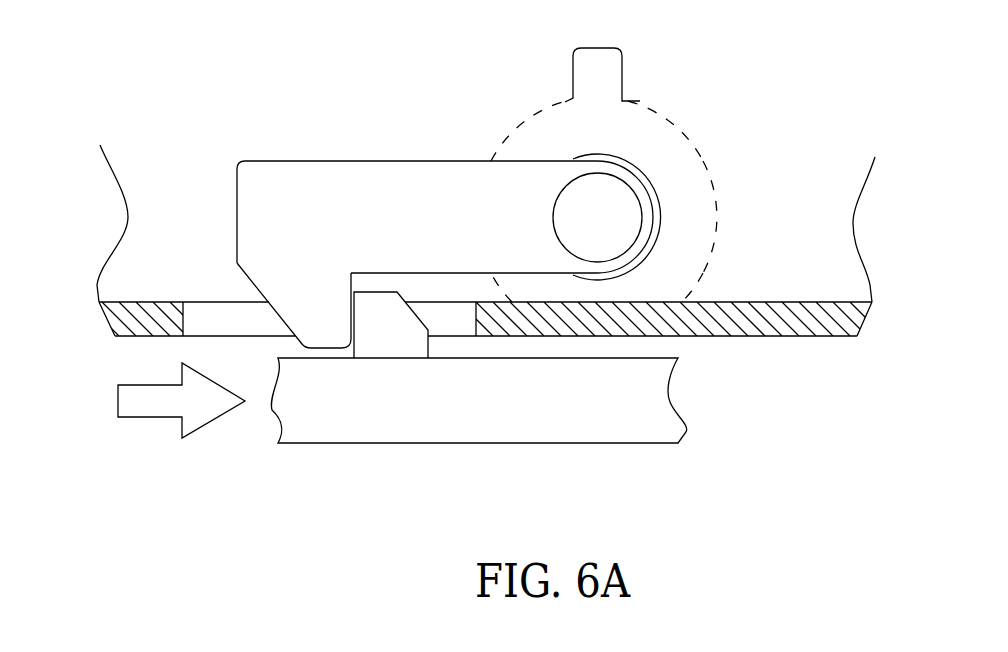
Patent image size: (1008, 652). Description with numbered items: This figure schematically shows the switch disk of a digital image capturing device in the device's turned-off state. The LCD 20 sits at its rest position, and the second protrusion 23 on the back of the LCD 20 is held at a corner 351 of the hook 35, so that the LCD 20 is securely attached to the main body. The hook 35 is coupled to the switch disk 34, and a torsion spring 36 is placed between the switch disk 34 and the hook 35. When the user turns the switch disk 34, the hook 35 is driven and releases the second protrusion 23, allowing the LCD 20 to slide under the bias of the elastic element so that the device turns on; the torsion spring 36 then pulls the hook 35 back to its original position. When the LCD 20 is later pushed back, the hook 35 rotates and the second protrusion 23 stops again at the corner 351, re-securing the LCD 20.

The LCD 20 is at (657, 415).
The second protrusion 23 is at (395, 345).
The switch disk 34 is at (637, 110).
The hook 35 is at (250, 173).
The corner of the hook 351 is at (366, 283).
The torsion spring 36 is at (655, 190).